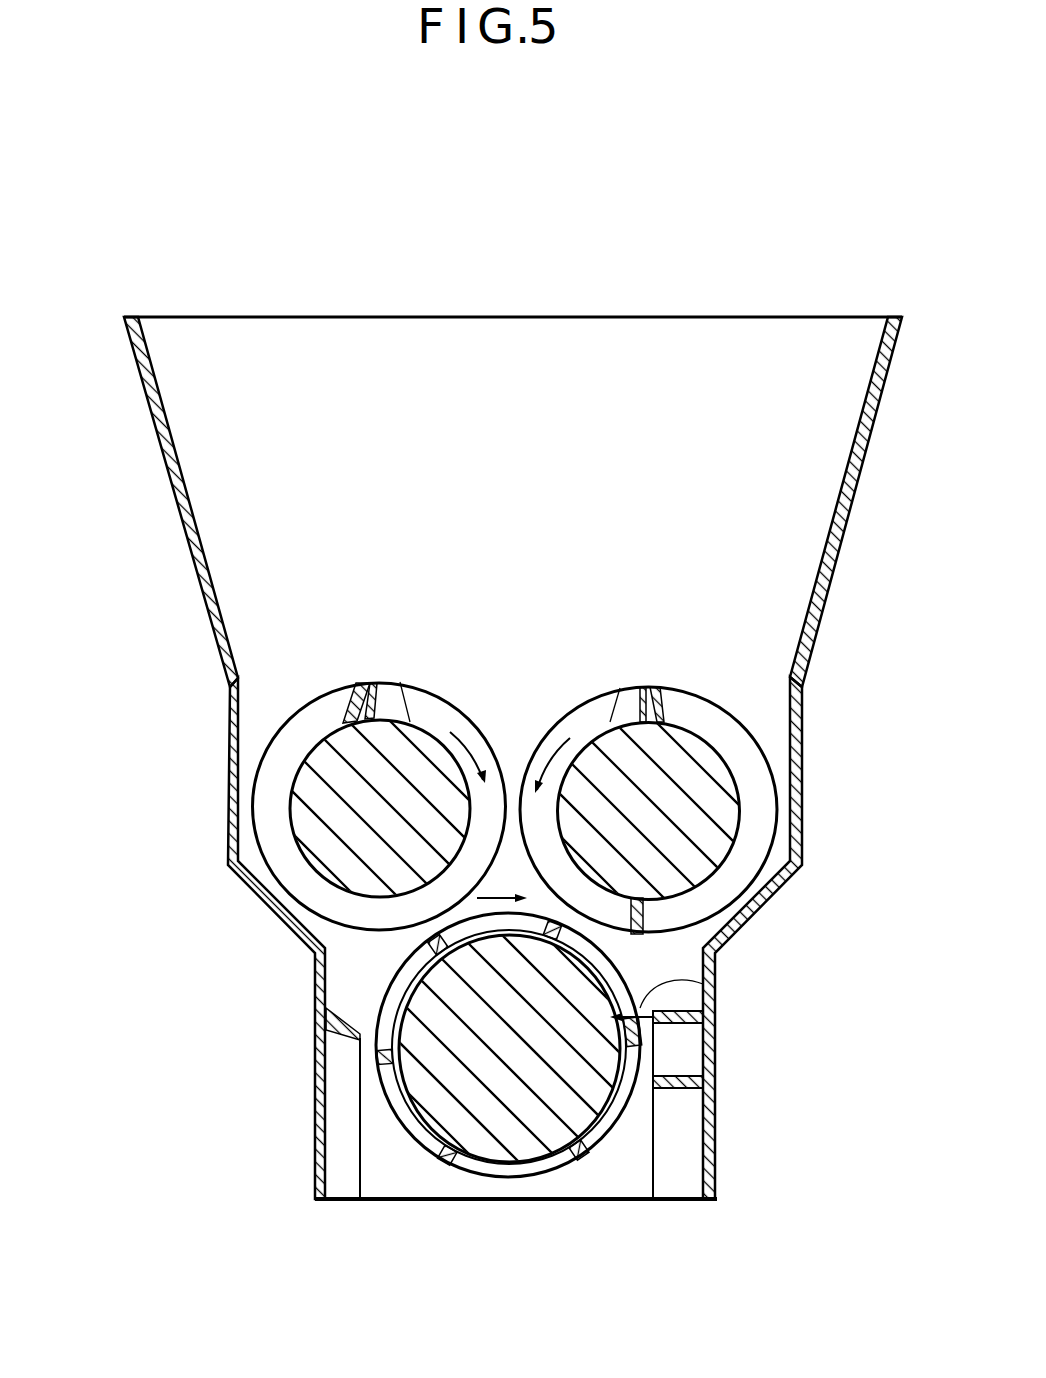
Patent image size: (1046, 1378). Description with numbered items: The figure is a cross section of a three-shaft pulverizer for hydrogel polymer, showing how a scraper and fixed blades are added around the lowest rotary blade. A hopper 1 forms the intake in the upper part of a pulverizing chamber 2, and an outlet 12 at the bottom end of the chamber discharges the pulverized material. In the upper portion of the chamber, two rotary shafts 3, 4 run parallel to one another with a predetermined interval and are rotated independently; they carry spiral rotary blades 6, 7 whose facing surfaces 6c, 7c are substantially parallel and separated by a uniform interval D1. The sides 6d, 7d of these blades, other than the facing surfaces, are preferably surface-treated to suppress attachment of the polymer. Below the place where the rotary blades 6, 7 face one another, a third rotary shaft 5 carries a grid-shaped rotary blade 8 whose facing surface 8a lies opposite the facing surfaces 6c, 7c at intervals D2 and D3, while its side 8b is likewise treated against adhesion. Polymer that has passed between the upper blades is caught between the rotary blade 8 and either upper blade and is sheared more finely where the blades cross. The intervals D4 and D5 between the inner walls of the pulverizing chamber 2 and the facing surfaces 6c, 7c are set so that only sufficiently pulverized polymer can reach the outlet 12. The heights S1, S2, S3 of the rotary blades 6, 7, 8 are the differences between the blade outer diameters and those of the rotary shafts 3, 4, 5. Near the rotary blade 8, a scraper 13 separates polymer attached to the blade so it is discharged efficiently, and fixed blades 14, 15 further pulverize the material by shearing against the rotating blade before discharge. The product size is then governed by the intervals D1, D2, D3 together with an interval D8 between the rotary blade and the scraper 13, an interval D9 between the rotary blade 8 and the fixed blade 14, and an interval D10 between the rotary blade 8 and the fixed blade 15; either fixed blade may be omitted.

The hopper 1 is at (877, 352).
The pulverizing chamber 2 is at (816, 748).
The rotary shaft 3 is at (318, 866).
The rotary shaft 4 is at (733, 850).
The rotary shaft 5 is at (417, 1080).
The rotary blade 6 is at (350, 684).
The facing surface 6c is at (366, 690).
The side 6d is at (387, 682).
The rotary blade 7 is at (667, 696).
The facing surface 7c is at (643, 687).
The side 7d is at (670, 713).
The rotary blade 8 is at (458, 1170).
The facing surface 8a is at (440, 1162).
The side 8b is at (478, 1168).
The outlet 12 is at (352, 1196).
The scraper 13 is at (335, 1048).
The fixed blade 14 is at (687, 1028).
The fixed blade 15 is at (687, 1090).
The height of rotary blade S1 is at (397, 743).
The height of rotary blade S2 is at (622, 752).
The height of rotary blade S3 is at (508, 1125).
The interval D1 is at (545, 695).
The interval D2 is at (430, 950).
The interval D3 is at (600, 942).
The interval D4 is at (274, 626).
The interval D5 is at (813, 618).
The interval D8 is at (362, 1199).
The interval D9 is at (712, 968).
The interval D10 is at (641, 1130).